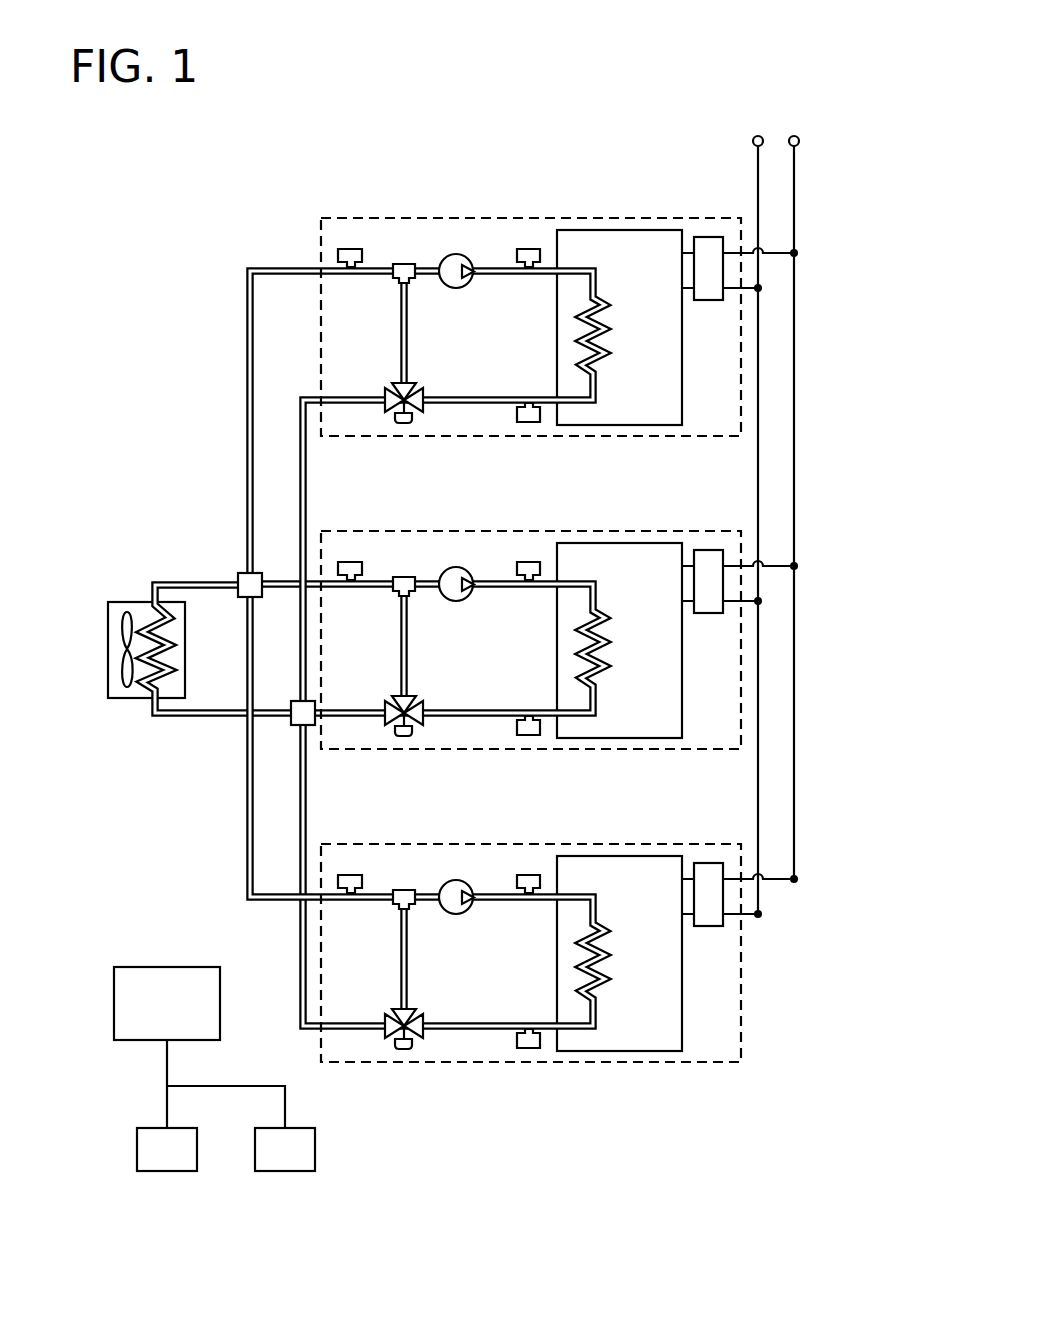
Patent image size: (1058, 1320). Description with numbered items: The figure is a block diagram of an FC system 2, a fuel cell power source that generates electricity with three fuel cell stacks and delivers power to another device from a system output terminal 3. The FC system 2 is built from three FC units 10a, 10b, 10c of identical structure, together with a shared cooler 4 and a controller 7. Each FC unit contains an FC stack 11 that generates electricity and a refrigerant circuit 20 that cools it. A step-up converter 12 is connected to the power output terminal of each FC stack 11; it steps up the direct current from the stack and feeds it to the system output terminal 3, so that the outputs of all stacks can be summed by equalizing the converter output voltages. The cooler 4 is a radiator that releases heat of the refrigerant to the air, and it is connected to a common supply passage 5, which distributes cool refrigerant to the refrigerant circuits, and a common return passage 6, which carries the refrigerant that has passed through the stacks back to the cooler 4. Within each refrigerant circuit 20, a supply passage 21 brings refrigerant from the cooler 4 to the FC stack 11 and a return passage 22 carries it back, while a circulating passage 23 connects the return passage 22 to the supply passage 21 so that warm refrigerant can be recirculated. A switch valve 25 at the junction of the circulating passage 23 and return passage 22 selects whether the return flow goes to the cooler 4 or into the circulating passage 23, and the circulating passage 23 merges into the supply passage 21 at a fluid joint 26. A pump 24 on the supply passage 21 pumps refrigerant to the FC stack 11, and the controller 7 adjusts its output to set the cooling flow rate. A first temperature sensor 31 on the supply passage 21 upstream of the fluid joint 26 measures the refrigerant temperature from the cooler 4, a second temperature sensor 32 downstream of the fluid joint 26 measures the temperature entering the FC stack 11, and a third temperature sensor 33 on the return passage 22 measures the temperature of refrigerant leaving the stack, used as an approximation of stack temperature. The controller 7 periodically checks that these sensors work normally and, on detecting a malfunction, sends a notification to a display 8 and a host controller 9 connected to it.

The FC system 2 is at (172, 210).
The system output terminal 3 is at (758, 136).
The cooler 4 is at (108, 680).
The common supply passage 5 is at (246, 333).
The common return passage 6 is at (298, 982).
The controller 7 is at (153, 967).
The display 8 is at (166, 1172).
The host controller 9 is at (283, 1172).
The FC unit 10a is at (340, 217).
The FC unit 10b is at (338, 530).
The FC unit 10c is at (340, 843).
The FC stack 11 is at (633, 229).
The step-up converter 12 is at (704, 237).
The refrigerant circuit 20 is at (537, 348).
The supply passage 21 is at (343, 276).
The return passage 22 is at (340, 396).
The circulating passage 23 is at (409, 327).
The pump 24 is at (458, 254).
The switch valve 25 is at (417, 388).
The fluid joint 26 is at (406, 264).
The first temperature sensor 31 is at (351, 249).
The second temperature sensor 32 is at (529, 249).
The third temperature sensor 33 is at (530, 423).